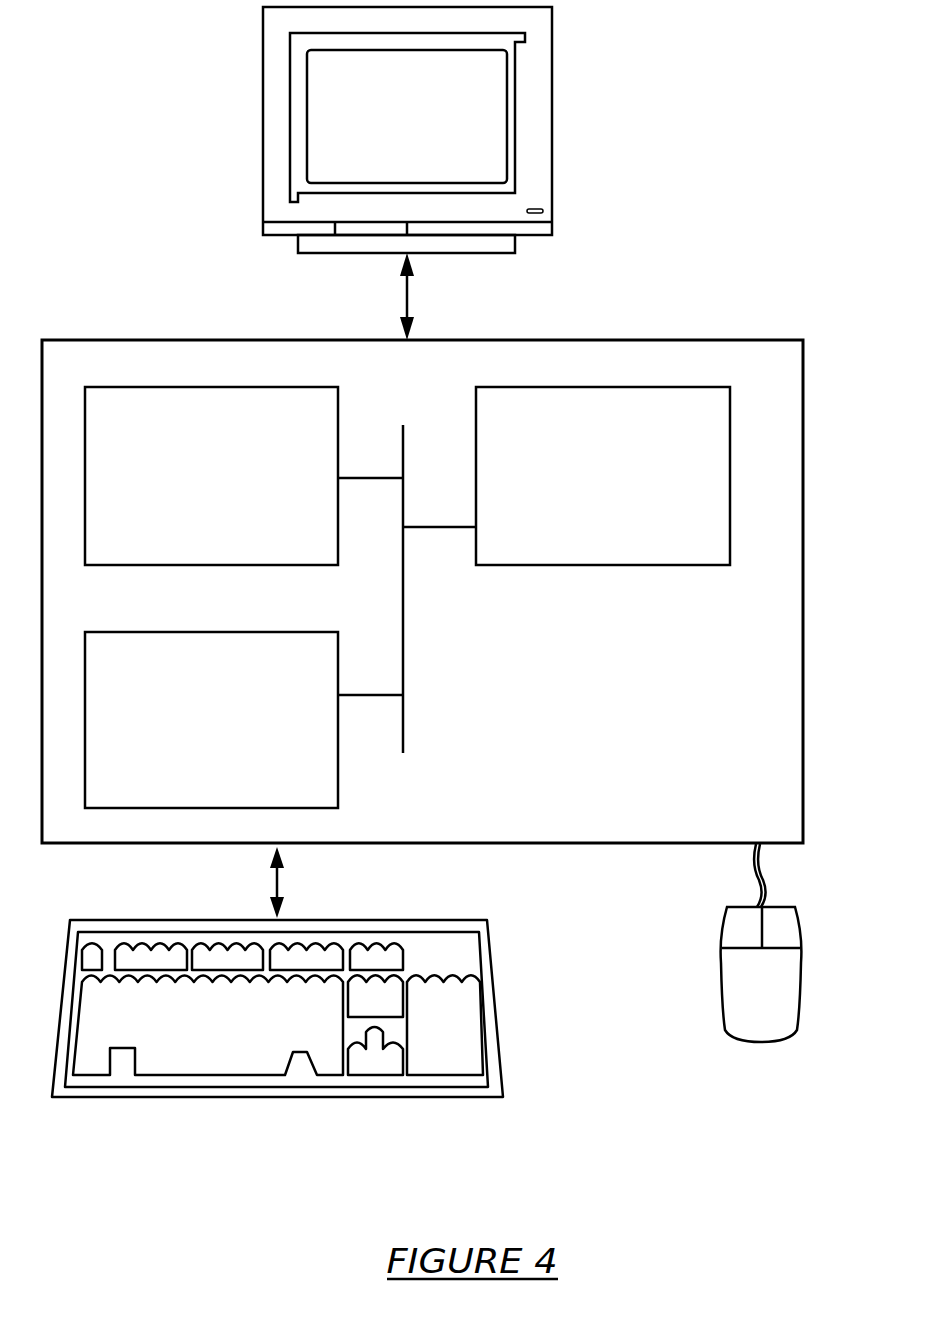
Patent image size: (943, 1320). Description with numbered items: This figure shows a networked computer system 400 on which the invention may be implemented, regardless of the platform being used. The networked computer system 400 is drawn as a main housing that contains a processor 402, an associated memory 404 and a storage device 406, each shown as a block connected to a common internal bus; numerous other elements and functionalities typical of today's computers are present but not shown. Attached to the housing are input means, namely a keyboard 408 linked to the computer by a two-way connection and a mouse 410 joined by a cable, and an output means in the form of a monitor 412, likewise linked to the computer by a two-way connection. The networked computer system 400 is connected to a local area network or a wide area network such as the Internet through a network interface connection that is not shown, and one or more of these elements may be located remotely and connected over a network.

The networked computer system 400 is at (782, 195).
The processor 402 is at (625, 488).
The memory 404 is at (237, 488).
The storage device 406 is at (231, 733).
The keyboard 408 is at (224, 1050).
The mouse 410 is at (787, 983).
The monitor 412 is at (431, 135).